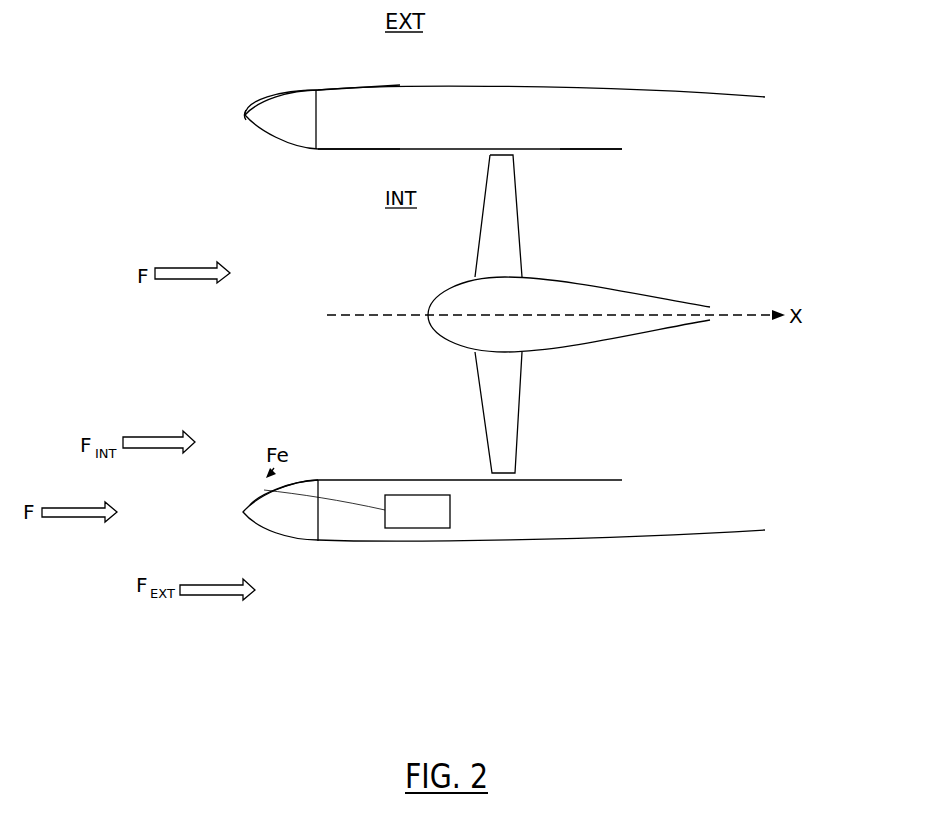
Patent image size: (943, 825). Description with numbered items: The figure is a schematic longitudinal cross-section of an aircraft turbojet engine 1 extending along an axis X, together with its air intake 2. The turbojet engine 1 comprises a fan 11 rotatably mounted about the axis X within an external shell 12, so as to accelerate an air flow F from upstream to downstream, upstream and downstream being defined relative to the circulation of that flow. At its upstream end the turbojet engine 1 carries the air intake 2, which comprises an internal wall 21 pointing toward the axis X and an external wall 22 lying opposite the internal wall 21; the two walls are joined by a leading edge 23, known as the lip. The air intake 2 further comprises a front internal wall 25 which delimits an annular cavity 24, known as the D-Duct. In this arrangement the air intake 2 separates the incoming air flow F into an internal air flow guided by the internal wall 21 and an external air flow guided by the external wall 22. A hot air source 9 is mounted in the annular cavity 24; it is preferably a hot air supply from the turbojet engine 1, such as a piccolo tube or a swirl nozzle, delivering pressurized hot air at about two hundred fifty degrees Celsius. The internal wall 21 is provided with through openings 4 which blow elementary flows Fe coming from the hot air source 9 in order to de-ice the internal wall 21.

The turbojet engine 1 is at (752, 181).
The air intake 2 is at (194, 78).
The through opening 4 is at (266, 490).
The hot air source 9 is at (417, 511).
The fan 11 is at (497, 219).
The external shell 12 is at (616, 152).
The internal wall 21 is at (285, 143).
The external wall 22 is at (284, 91).
The leading edge 23 is at (246, 114).
The annular cavity 24 is at (303, 130).
The front internal wall 25 is at (318, 128).